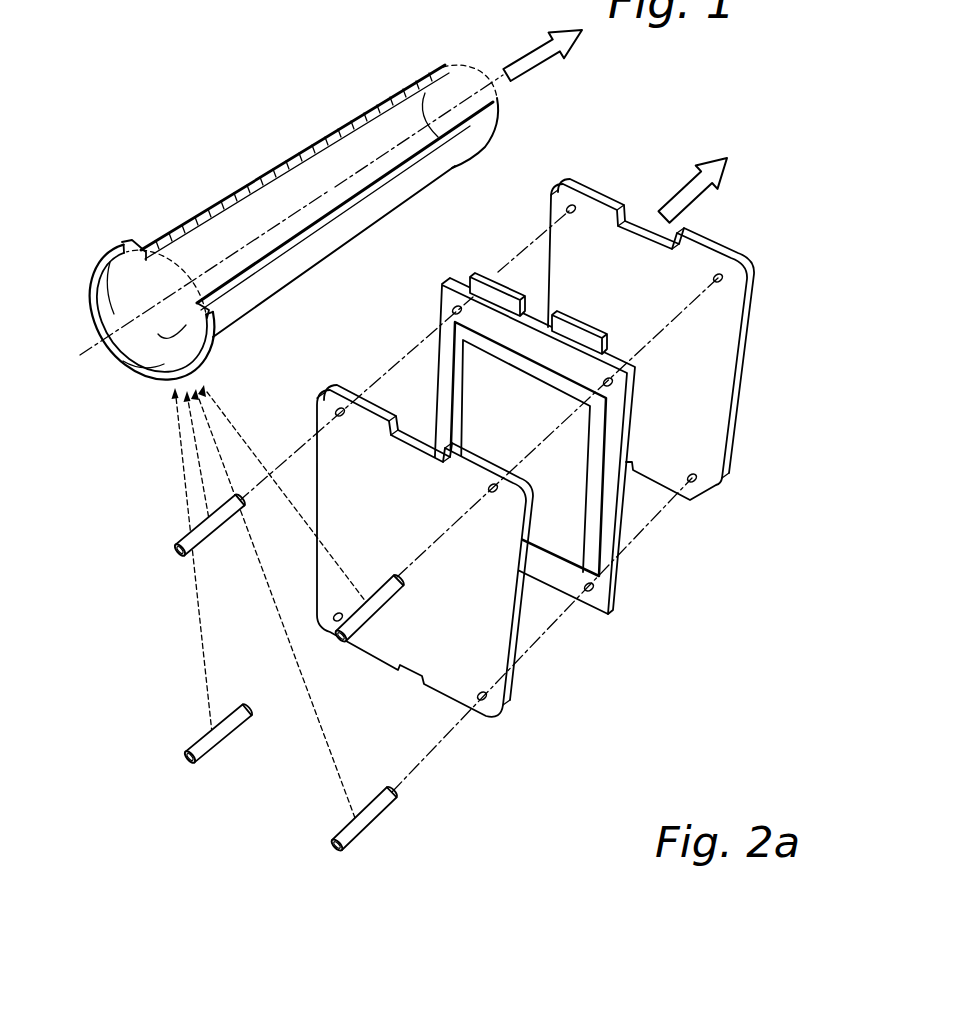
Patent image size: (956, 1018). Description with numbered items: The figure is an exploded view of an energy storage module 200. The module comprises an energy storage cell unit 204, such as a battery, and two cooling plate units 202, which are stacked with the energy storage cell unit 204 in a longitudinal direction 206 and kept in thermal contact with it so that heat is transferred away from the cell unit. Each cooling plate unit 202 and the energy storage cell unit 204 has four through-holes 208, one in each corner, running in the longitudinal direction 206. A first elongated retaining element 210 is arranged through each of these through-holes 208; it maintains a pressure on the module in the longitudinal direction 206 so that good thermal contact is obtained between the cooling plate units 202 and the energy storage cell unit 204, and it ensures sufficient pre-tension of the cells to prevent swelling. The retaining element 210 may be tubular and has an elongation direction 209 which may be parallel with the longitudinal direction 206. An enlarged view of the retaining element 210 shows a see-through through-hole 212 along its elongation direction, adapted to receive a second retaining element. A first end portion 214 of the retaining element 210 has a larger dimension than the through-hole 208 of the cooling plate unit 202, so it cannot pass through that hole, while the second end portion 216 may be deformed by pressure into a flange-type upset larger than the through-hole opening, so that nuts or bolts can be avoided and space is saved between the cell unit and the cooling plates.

The energy storage module 200 is at (658, 150).
The cooling plate unit 202 is at (738, 357).
The energy storage cell unit 204 is at (604, 520).
The longitudinal direction 206 is at (710, 196).
The through-hole 208 is at (567, 210).
The elongation direction 209 is at (534, 69).
The first elongated retaining element 210 is at (205, 210).
The through-hole 212 is at (152, 348).
The first end portion 214 is at (100, 267).
The second end portion 216 is at (438, 68).